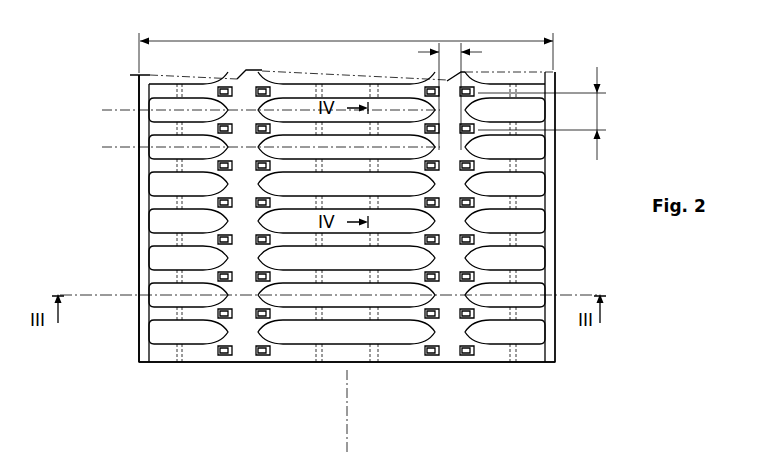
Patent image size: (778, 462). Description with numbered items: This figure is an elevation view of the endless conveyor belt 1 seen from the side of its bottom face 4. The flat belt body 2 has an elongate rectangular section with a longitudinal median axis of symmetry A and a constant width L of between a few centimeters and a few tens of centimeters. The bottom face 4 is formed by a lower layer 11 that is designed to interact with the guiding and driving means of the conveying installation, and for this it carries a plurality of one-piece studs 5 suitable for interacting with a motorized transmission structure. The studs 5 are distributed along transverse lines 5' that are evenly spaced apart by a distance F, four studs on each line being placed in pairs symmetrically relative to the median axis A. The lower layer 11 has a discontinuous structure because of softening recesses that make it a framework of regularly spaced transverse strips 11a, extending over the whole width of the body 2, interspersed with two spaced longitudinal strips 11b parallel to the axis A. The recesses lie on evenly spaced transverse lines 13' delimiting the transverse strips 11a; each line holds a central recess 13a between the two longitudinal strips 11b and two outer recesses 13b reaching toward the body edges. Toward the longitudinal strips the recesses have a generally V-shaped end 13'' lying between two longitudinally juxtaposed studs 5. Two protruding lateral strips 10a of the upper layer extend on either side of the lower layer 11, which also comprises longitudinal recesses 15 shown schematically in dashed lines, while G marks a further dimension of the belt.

The conveyor belt 1 is at (122, 77).
The belt body 2 is at (137, 180).
The bottom face 4 is at (167, 362).
The lower layer 11 is at (343, 254).
The studs 5 is at (449, 259).
The transverse lines 5' is at (559, 89).
The lateral strips 10a is at (137, 204).
The transverse strips 11a is at (150, 262).
The longitudinal strips 11b is at (242, 350).
The transverse lines 13' is at (236, 129).
The V-shaped end 13'' is at (434, 267).
The central recess 13a is at (335, 334).
The outer recesses 13b is at (150, 331).
The longitudinal recesses 15 is at (172, 93).
The width L is at (346, 39).
The gap width G is at (421, 52).
The distance F is at (598, 109).
The median axis A is at (350, 436).